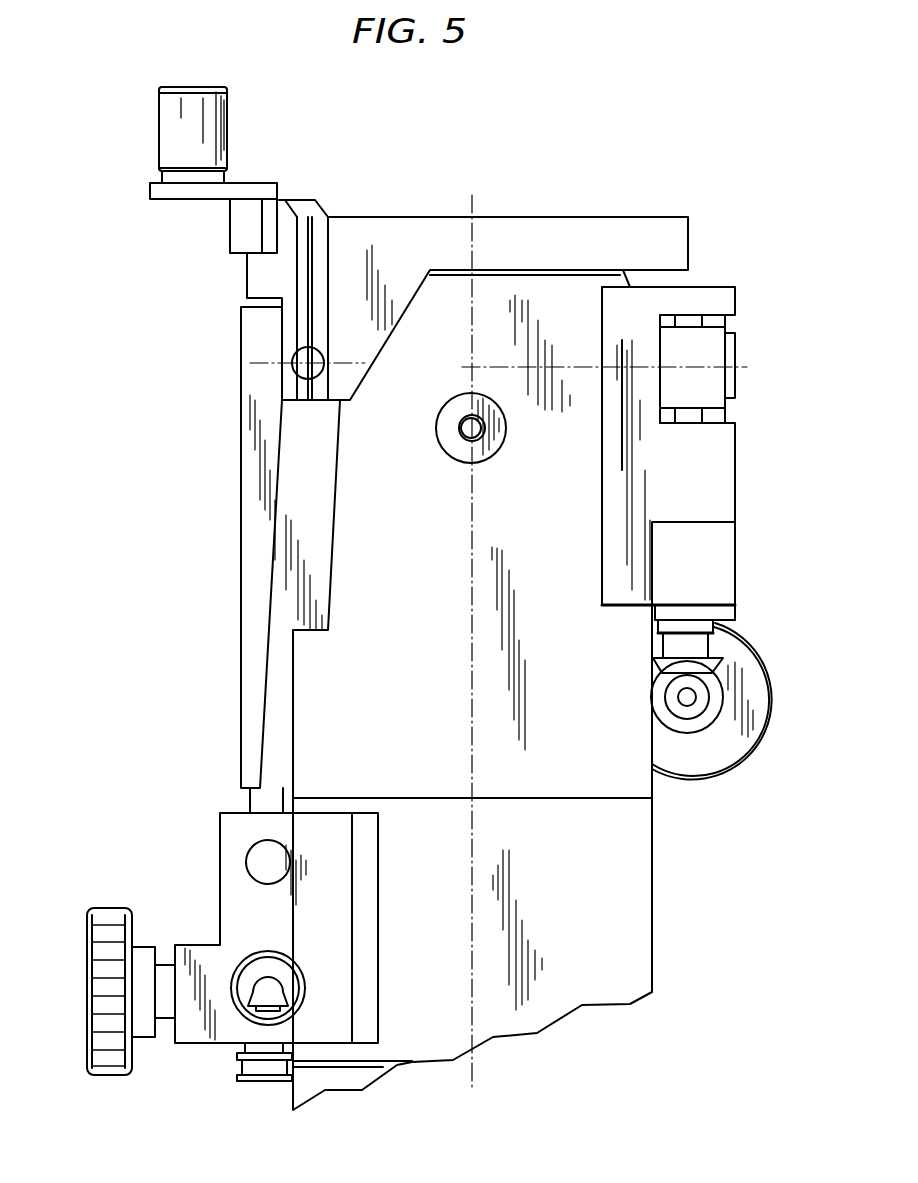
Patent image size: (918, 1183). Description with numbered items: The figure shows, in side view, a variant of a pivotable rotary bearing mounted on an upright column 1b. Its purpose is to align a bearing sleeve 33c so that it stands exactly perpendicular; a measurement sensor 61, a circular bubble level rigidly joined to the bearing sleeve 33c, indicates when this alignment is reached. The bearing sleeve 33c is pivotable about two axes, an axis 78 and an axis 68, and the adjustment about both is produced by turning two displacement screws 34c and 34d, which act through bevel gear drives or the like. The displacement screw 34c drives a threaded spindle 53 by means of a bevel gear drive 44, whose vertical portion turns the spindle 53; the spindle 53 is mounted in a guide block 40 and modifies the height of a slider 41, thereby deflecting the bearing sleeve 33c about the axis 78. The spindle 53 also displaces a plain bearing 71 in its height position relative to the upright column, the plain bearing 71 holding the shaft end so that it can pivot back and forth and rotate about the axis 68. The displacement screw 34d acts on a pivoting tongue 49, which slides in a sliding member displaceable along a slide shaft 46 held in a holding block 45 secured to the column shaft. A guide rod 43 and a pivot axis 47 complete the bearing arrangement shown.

The upright column 1b is at (630, 902).
The bearing sleeve 33c is at (533, 214).
The displacement screw 34c is at (702, 747).
The displacement screw 34d is at (100, 1037).
The guide block 40 is at (717, 557).
The slider 41 is at (708, 382).
The guide rod 43 is at (693, 323).
The bevel gear drive 44 is at (697, 703).
The holding block 45 is at (230, 900).
The slide shaft 46 is at (258, 858).
The pivot axis 47 is at (232, 343).
The axis 78 is at (306, 360).
The pivoting tongue 49 is at (252, 523).
The threaded spindle 53 is at (693, 648).
The measurement sensor 61 is at (228, 134).
The axis 68 is at (623, 366).
The plain bearing 71 is at (733, 350).